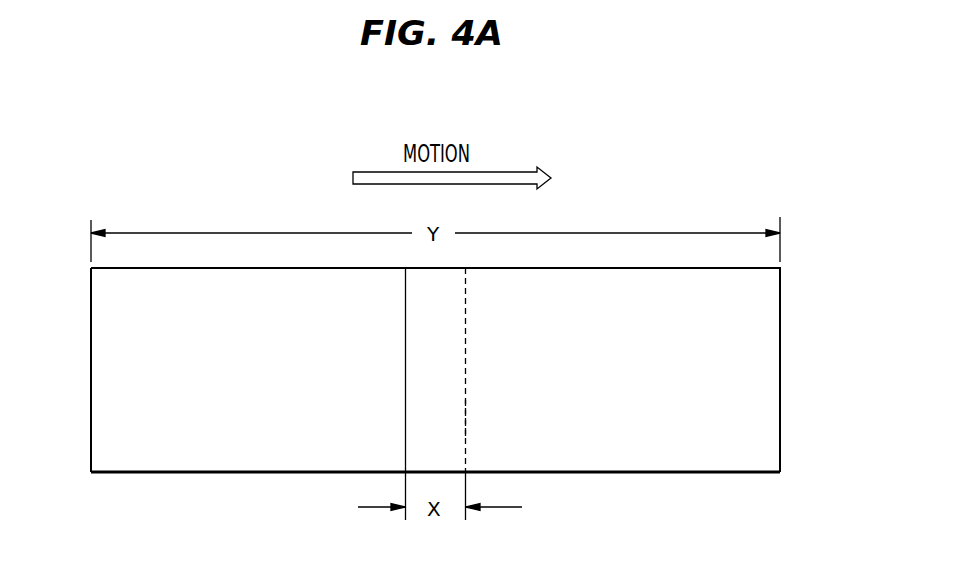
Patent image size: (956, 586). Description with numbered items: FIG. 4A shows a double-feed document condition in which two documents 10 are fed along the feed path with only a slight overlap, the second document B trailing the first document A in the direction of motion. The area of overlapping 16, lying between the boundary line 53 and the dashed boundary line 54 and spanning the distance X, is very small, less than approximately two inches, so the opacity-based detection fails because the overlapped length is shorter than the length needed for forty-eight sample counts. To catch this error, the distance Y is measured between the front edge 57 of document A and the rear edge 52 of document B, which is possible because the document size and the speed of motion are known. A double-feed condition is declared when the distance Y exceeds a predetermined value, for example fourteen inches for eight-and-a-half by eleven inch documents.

The documents 10 is at (200, 461).
The area of overlapping 16 is at (442, 353).
The rear edge of document B 52 is at (91, 440).
The laser beam position line 53 is at (405, 440).
The dashed boundary line 54 is at (468, 440).
The front edge of document A 57 is at (781, 436).